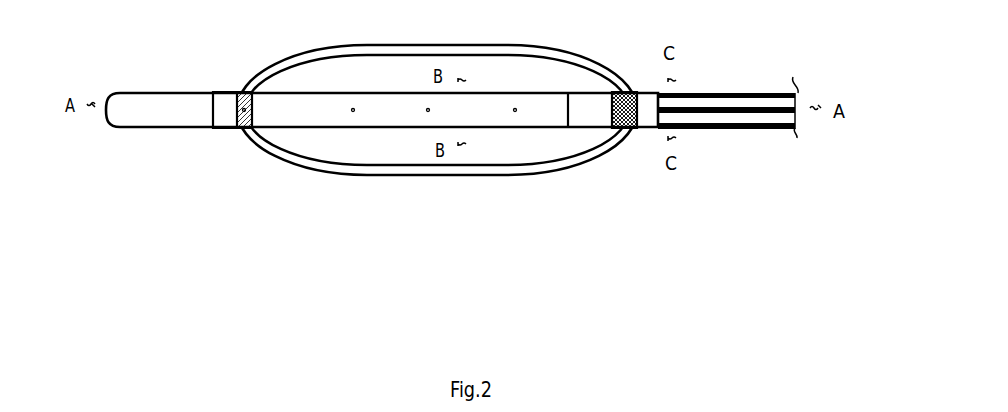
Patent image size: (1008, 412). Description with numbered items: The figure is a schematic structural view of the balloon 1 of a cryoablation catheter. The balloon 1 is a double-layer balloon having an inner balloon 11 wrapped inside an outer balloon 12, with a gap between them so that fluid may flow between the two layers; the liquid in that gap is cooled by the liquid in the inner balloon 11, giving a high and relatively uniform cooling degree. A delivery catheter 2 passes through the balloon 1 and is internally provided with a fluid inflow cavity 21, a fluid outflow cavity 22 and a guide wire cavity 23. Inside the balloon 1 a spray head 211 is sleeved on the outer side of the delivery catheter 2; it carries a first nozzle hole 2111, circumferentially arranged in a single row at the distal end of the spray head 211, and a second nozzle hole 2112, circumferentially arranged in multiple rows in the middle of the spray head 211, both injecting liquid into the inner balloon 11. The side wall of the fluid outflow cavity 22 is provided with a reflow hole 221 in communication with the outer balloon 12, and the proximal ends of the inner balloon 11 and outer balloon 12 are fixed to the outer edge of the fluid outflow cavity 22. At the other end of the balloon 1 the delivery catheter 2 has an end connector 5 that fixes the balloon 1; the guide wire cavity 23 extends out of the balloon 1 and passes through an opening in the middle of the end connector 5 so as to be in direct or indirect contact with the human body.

The balloon 1 is at (437, 176).
The inner balloon 11 is at (460, 166).
The outer balloon 12 is at (527, 177).
The end connector 5 is at (187, 110).
The spray head 211 is at (300, 128).
The first nozzle hole 2111 is at (245, 128).
The second nozzle hole 2112 is at (353, 112).
The reflow hole 221 is at (620, 133).
The delivery catheter 2 is at (756, 192).
The fluid outflow cavity 22 is at (695, 131).
The fluid inflow cavity 21 is at (750, 117).
The guide wire cavity 23 is at (797, 118).